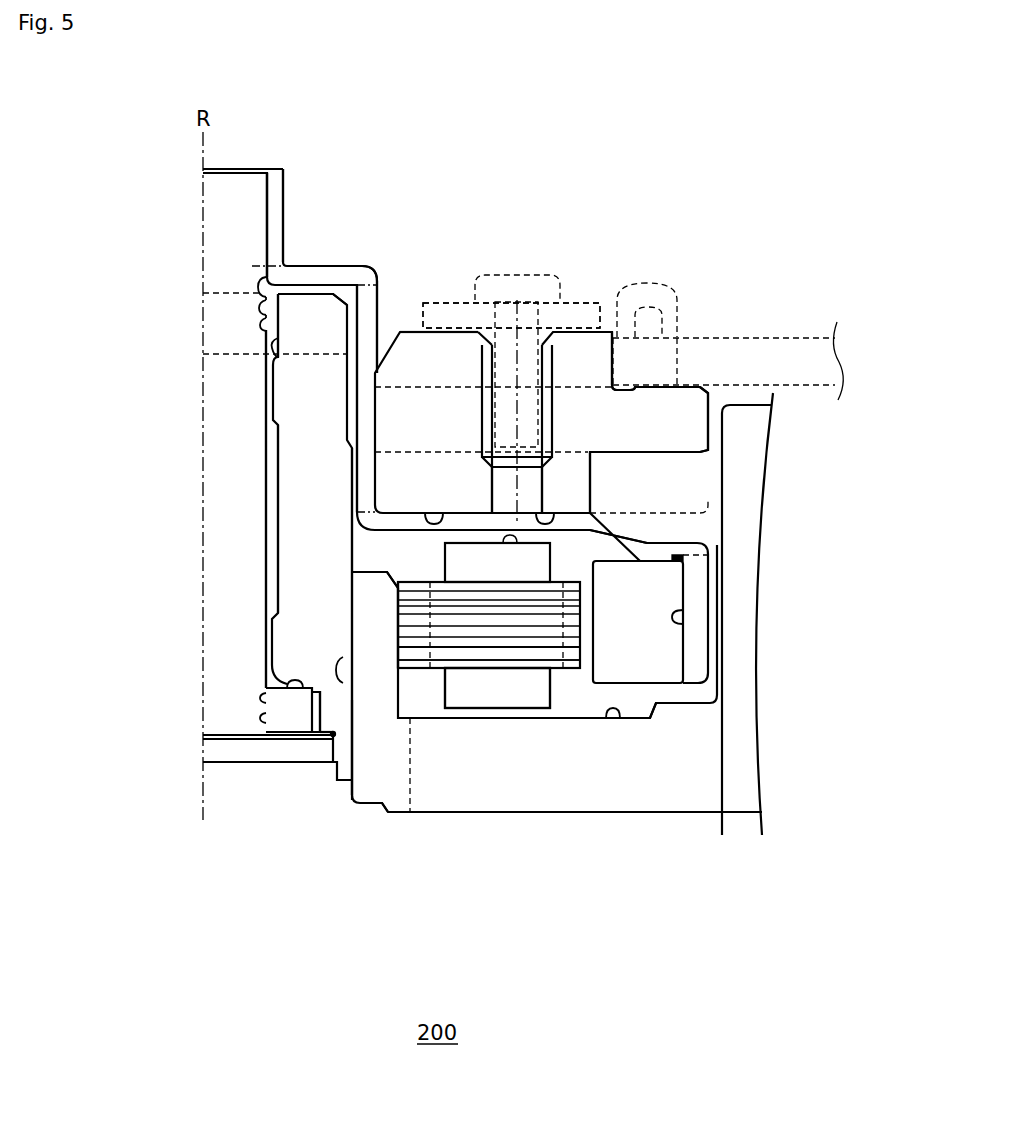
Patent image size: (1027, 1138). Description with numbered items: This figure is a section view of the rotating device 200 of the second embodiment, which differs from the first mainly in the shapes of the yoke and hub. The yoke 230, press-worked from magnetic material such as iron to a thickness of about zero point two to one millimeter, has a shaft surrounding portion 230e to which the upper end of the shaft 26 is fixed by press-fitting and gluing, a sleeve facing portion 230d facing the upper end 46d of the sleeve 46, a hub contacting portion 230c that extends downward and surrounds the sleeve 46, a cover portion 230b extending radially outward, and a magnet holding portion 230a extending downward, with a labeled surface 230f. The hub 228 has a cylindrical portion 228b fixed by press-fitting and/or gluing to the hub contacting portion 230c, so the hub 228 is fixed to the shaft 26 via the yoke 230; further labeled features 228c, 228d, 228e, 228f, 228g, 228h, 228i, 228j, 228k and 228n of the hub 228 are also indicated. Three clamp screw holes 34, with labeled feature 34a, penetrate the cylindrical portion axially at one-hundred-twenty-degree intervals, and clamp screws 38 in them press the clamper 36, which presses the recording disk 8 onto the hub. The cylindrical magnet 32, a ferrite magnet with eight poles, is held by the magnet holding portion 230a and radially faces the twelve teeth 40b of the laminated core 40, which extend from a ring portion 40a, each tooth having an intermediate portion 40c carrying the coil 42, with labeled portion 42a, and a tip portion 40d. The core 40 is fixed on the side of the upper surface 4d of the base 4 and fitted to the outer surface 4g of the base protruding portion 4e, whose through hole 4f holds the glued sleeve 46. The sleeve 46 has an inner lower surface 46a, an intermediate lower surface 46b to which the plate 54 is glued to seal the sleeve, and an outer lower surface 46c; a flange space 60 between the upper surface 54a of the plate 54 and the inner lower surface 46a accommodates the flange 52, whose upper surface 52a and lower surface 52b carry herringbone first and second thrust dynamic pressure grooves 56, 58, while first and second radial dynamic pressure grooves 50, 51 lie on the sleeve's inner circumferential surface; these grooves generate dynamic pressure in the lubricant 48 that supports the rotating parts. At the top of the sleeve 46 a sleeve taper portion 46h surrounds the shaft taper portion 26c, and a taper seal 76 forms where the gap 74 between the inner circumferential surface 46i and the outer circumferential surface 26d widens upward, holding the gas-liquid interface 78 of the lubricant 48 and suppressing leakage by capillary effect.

The shaft 26 is at (215, 192).
The shaft taper portion 26c is at (262, 352).
The outer circumferential surface of the shaft taper portion 26d is at (262, 297).
The yoke 230 is at (698, 592).
The magnet holding portion 230a is at (698, 641).
The cover portion 230b is at (585, 522).
The hub contacting portion 230c is at (370, 310).
The sleeve facing portion 230d is at (315, 278).
The shaft surrounding portion 230e is at (287, 192).
The bracket protrusion 230f is at (677, 617).
The hub 228 is at (413, 340).
The cylindrical portion 228b is at (556, 90).
The holder portion 228c is at (410, 355).
The holder portion 228d is at (437, 360).
The holder portion 228e is at (462, 465).
The holder recess 228f is at (625, 360).
The holder hole 228g is at (660, 385).
The holder surface 228h is at (588, 478).
The holder surface 228i is at (688, 450).
The holder surface 228j is at (683, 495).
The holder recess 228k is at (432, 510).
The holder portion 228n is at (618, 335).
The clamp screw holes 34 is at (533, 300).
The bolt end 34a is at (547, 510).
The clamp screws 38 is at (512, 298).
The clamper 36 is at (575, 360).
The recording disk 8 is at (758, 337).
The sleeve 46 is at (292, 380).
The inner lower surface 46a is at (298, 688).
The intermediate lower surface 46b is at (325, 745).
The outer lower surface 46c is at (343, 770).
The upper end of the sleeve 46d is at (323, 293).
The sleeve taper portion 46h is at (302, 312).
The inner circumferential surface of the sleeve taper portion 46i is at (292, 347).
The gap 74 is at (262, 284).
The taper seal 76 is at (268, 318).
The gas-liquid interface 78 is at (266, 308).
The lubricant 48 is at (270, 328).
The first radial dynamic pressure groove 50 is at (268, 393).
The second radial dynamic pressure groove 51 is at (275, 634).
The flange 52 is at (270, 698).
The upper surface of the flange 52a is at (270, 666).
The lower surface of the flange 52b is at (290, 745).
The first thrust dynamic pressure groove 56 is at (231, 690).
The second thrust dynamic pressure groove 58 is at (321, 839).
The flange space 60 is at (270, 718).
The plate 54 is at (215, 745).
The upper surface of the plate 54a is at (253, 742).
The base 4 is at (722, 797).
The upper surface of the base 4d is at (613, 720).
The base protruding portion 4e is at (392, 805).
The through hole 4f is at (356, 770).
The outer surface of the base protruding portion 4g is at (395, 712).
The cylindrical magnet 32 is at (637, 720).
The laminated core 40 is at (462, 645).
The ring portion 40a is at (420, 650).
The teeth 40b is at (612, 950).
The intermediate portion 40c is at (525, 650).
The tip portion 40d is at (572, 655).
The coil 42 is at (478, 560).
The coil portion 42a is at (500, 685).
The rotating device 200 is at (437, 1033).